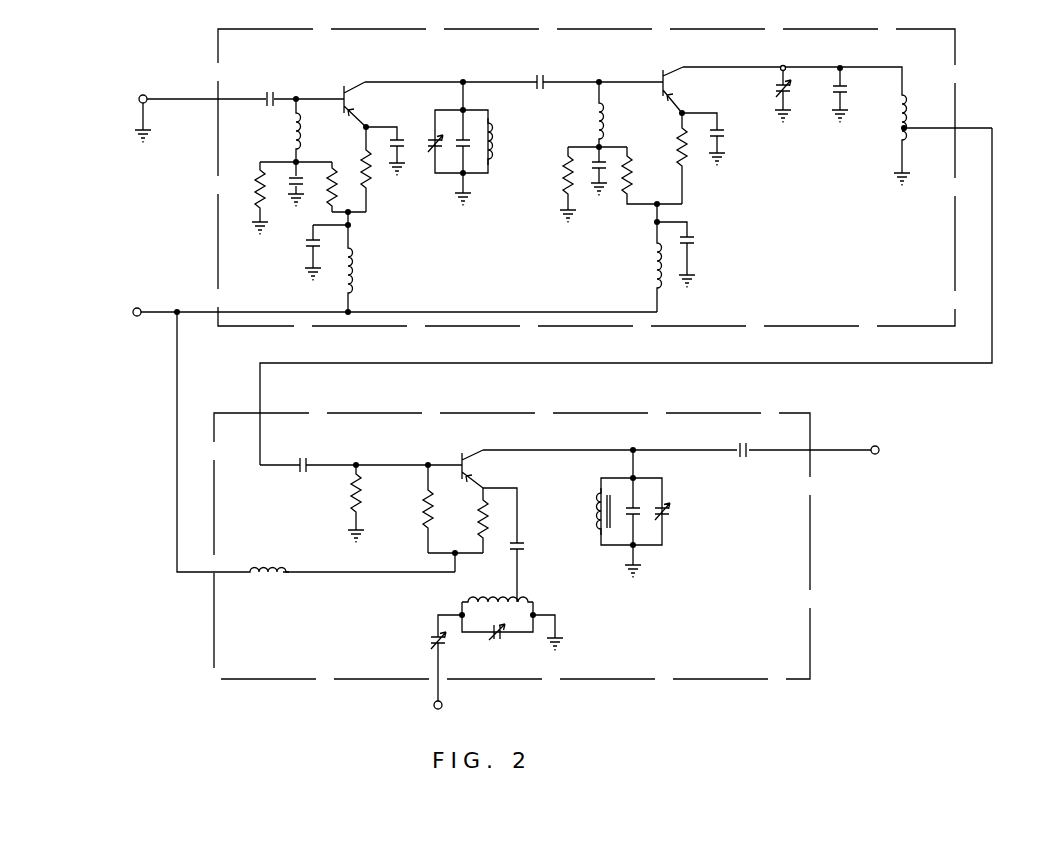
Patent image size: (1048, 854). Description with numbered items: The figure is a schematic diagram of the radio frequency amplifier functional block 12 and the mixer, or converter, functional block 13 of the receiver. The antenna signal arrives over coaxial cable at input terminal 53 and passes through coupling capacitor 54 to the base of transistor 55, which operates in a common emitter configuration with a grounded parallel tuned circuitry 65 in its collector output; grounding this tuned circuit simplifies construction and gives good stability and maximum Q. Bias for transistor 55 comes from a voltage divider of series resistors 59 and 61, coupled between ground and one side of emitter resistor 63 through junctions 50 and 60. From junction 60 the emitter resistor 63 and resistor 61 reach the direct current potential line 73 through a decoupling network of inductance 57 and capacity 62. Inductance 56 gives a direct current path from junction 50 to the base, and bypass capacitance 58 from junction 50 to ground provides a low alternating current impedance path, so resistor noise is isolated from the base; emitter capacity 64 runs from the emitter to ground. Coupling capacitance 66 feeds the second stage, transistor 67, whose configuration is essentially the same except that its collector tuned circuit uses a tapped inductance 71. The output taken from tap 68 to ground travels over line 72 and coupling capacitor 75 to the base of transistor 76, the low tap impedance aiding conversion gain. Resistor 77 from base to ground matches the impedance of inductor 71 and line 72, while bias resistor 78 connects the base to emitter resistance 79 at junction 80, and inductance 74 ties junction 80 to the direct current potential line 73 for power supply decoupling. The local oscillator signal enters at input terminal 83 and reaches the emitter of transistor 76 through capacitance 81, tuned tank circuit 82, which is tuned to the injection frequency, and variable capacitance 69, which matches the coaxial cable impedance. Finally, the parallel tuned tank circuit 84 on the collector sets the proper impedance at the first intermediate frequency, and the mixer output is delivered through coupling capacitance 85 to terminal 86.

The radio frequency amplifier functional block 12 is at (642, 30).
The mixer functional block 13 is at (614, 413).
The junction 50 is at (297, 160).
The input terminal 53 is at (137, 102).
The coupling capacitor 54 is at (275, 96).
The transistor 55 is at (352, 76).
The inductance 56 is at (290, 133).
The inductance 57 is at (352, 253).
The bypass capacitance 58 is at (294, 184).
The resistor 59 is at (256, 192).
The junction 60 is at (351, 211).
The resistor 61 is at (338, 196).
The capacity 62 is at (313, 244).
The emitter resistor 63 is at (363, 137).
The emitter capacity 64 is at (397, 139).
The parallel tuned circuitry 65 is at (498, 115).
The coupling capacitance 66 is at (546, 77).
The transistor 67 is at (656, 67).
The tap 68 is at (908, 131).
The variable capacitance 69 is at (433, 637).
The tapped inductance 71 is at (907, 110).
The line 72 is at (990, 347).
The direct current potential line 73 is at (132, 320).
The inductance 74 is at (270, 567).
The coupling capacitor 75 is at (310, 463).
The transistor 76 is at (453, 455).
The impedance matching resistor 77 is at (365, 492).
The bias resistor 78 is at (420, 499).
The emitter resistance 79 is at (480, 530).
The junction 80 is at (458, 556).
The capacitance 81 is at (521, 541).
The tuned tank circuit 82 is at (542, 594).
The input terminal 83 is at (445, 705).
The parallel tuned tank circuit 84 is at (672, 478).
The coupling capacitance 85 is at (748, 448).
The terminal 86 is at (882, 447).